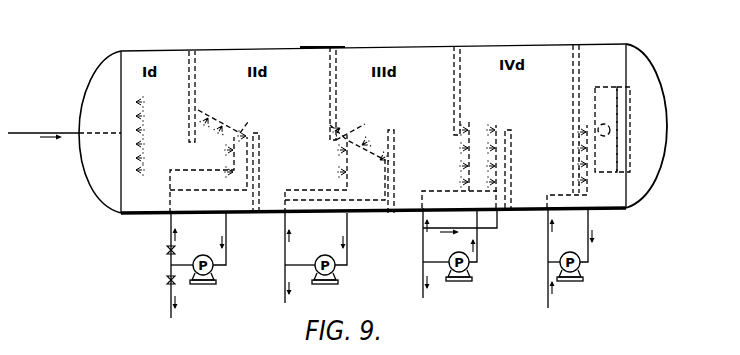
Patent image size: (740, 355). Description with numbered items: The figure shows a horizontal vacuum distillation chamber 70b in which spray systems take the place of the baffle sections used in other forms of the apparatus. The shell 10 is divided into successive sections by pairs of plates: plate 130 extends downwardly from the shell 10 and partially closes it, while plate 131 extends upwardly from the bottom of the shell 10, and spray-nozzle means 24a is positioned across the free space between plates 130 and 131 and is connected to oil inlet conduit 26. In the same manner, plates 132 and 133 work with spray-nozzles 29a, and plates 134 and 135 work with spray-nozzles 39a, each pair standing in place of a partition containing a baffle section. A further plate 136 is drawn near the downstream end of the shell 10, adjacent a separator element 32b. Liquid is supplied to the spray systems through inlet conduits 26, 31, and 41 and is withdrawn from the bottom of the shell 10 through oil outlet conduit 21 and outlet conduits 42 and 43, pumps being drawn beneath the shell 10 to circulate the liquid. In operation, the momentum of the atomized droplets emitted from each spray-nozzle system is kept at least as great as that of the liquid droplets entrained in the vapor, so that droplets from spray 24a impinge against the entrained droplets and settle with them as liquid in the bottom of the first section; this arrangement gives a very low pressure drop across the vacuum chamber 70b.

The shell 10 is at (258, 51).
The vacuum distillation chamber 70b is at (325, 47).
The plate 130 is at (196, 51).
The plate 132 is at (337, 91).
The plate 134 is at (466, 52).
The vapor pipe 136 is at (585, 52).
The plate 131 is at (259, 165).
The plate 133 is at (394, 165).
The plate 135 is at (512, 160).
The spray-nozzle means 24a is at (240, 130).
The spray-nozzles 29a is at (360, 129).
The spray-nozzles 39a is at (469, 120).
The outlet connection 32b is at (631, 112).
The oil inlet conduit 26 is at (171, 230).
The oil outlet conduit 21 is at (226, 232).
The inlet conduit 31 is at (285, 247).
The outlet conduit 42 is at (347, 232).
The inlet conduit 41 is at (423, 248).
The outlet conduit 43 is at (477, 250).